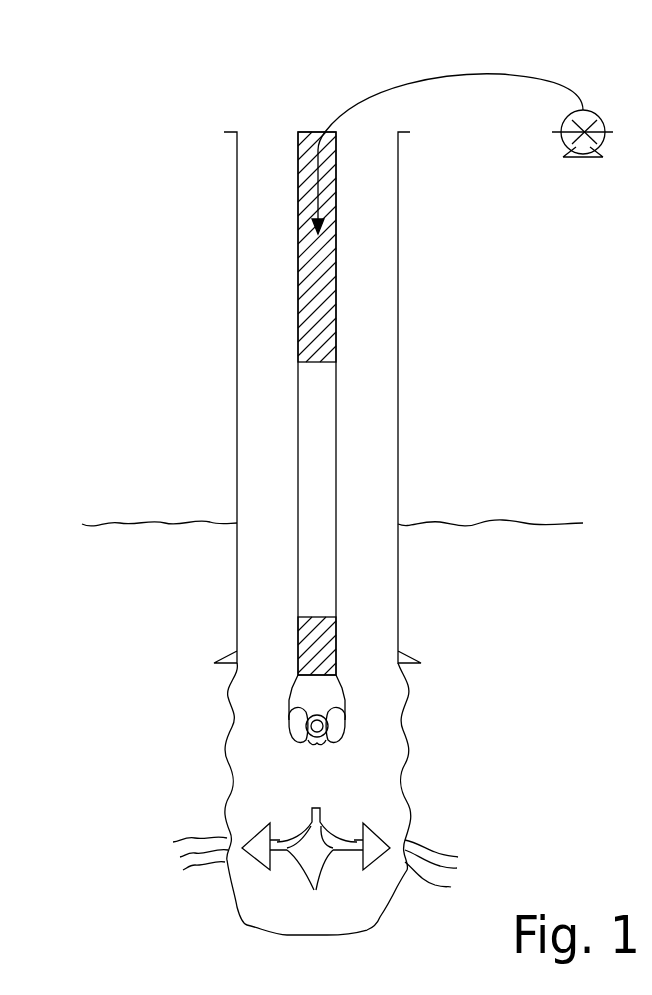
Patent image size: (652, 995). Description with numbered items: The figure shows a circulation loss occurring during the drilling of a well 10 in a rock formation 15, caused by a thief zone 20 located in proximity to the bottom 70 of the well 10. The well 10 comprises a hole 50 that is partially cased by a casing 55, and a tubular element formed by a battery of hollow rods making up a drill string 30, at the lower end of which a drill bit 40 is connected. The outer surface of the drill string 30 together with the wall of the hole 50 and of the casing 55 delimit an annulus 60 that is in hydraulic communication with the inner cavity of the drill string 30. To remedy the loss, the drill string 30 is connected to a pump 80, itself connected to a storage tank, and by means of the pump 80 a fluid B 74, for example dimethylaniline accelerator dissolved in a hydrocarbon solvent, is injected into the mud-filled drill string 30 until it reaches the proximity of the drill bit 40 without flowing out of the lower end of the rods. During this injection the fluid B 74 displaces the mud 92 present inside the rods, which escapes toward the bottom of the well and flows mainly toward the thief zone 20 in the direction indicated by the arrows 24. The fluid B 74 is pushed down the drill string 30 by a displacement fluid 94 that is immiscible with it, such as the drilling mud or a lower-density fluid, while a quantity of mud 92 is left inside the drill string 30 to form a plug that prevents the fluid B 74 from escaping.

The well 10 is at (519, 391).
The rock formation 15 is at (547, 655).
The thief zone 20 is at (210, 840).
The arrows 24 is at (316, 867).
The drill string 30 is at (336, 392).
The drill bit 40 is at (322, 704).
The hole 50 is at (232, 728).
The casing 55 is at (237, 430).
The annulus 60 is at (283, 371).
The bottom of the well 70 is at (340, 908).
The fluid B 74 is at (320, 565).
The pump 80 is at (474, 154).
The mud 92 is at (320, 650).
The displacement fluid 94 is at (313, 260).